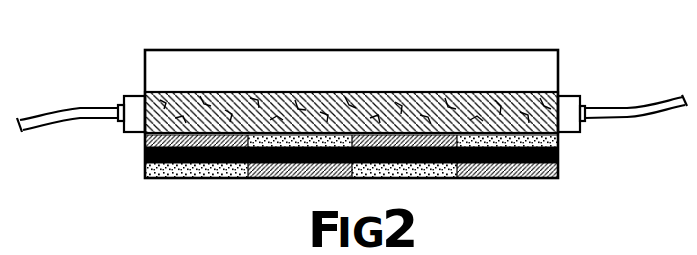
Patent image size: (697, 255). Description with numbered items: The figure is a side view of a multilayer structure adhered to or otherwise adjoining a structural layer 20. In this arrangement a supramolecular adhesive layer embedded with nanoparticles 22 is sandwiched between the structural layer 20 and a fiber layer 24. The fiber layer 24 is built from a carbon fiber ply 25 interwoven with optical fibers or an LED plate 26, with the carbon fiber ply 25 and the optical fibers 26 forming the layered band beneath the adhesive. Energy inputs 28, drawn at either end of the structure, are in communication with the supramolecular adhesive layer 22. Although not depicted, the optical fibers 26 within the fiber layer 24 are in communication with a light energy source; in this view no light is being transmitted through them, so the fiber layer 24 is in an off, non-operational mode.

The structural layer 20 is at (237, 58).
The supramolecular adhesive layer embedded with nanoparticles 22 is at (208, 93).
The fiber layer 24 is at (330, 177).
The carbon fiber ply 25 is at (560, 138).
The optical fibers or LED plate 26 is at (560, 156).
The energy inputs 28 is at (134, 95).